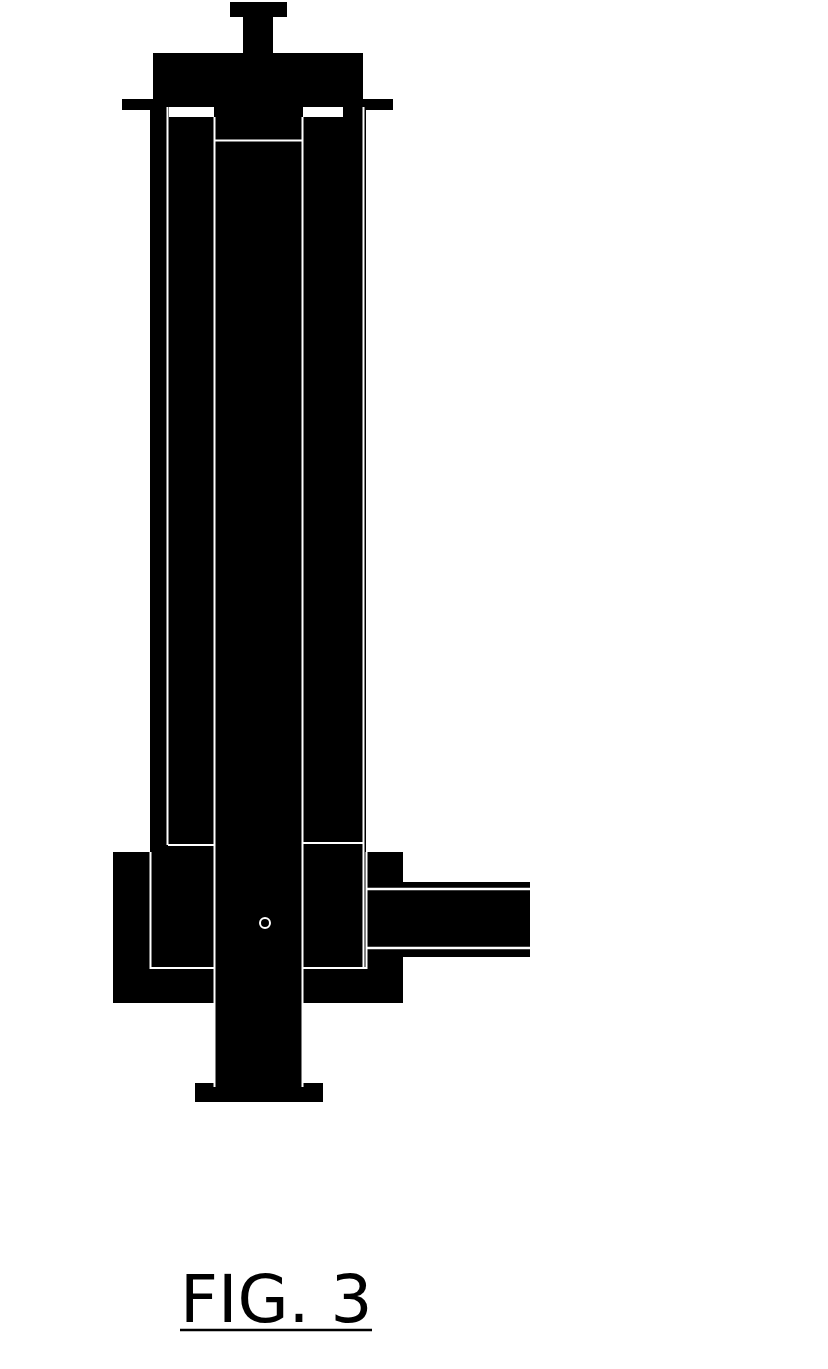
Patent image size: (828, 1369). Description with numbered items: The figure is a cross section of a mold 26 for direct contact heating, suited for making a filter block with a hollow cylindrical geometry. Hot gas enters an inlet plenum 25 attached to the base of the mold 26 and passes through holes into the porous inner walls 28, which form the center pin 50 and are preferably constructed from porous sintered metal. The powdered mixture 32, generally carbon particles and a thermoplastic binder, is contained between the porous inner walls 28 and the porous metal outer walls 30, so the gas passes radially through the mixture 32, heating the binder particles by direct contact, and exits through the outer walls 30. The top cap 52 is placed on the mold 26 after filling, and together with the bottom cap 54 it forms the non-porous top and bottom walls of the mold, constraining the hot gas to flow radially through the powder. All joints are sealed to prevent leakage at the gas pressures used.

The inlet plenum 25 is at (507, 917).
The mold 26 is at (350, 552).
The inner walls 28 is at (318, 313).
The outer walls 30 is at (152, 345).
The powdered mixture 32 is at (335, 452).
The center pin 50 is at (213, 535).
The top cap 52 is at (340, 72).
The bottom cap 54 is at (399, 992).